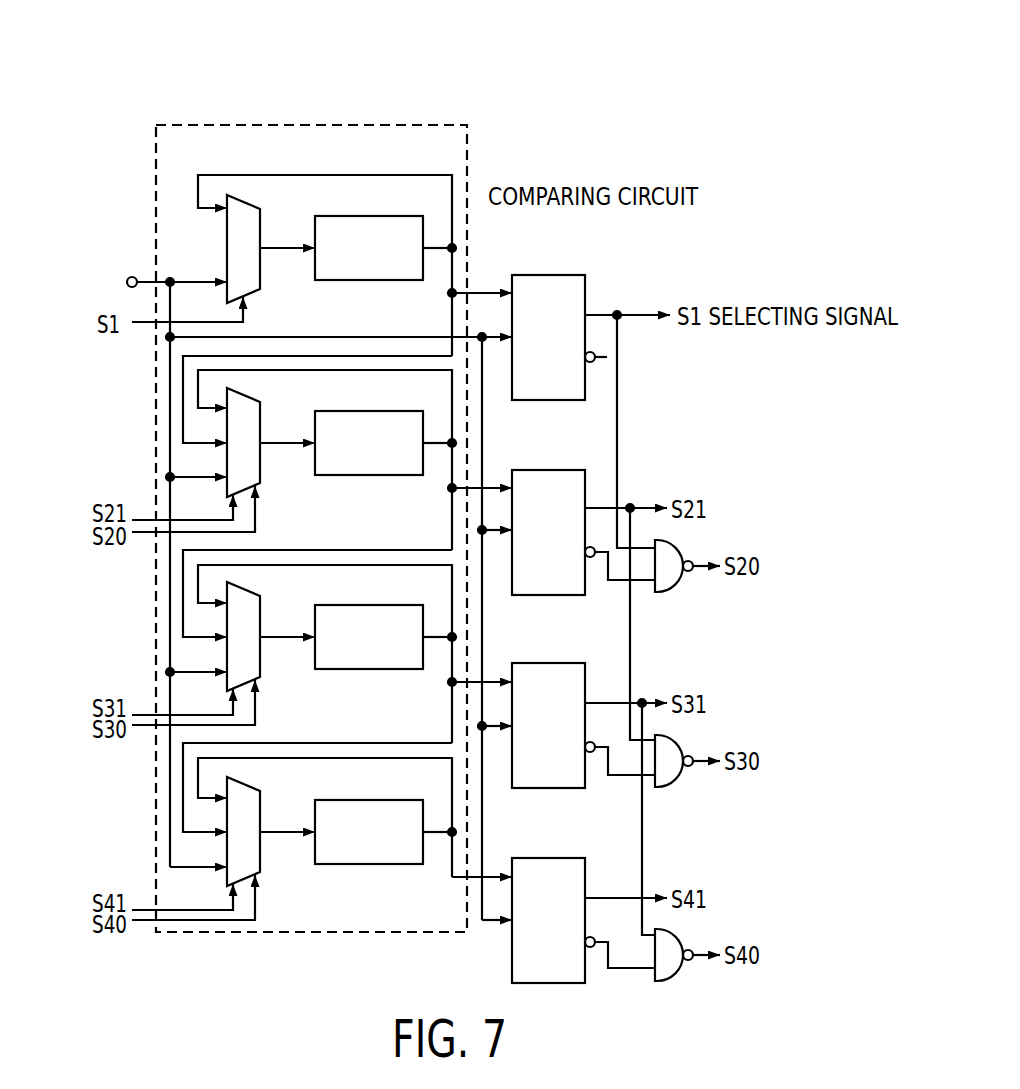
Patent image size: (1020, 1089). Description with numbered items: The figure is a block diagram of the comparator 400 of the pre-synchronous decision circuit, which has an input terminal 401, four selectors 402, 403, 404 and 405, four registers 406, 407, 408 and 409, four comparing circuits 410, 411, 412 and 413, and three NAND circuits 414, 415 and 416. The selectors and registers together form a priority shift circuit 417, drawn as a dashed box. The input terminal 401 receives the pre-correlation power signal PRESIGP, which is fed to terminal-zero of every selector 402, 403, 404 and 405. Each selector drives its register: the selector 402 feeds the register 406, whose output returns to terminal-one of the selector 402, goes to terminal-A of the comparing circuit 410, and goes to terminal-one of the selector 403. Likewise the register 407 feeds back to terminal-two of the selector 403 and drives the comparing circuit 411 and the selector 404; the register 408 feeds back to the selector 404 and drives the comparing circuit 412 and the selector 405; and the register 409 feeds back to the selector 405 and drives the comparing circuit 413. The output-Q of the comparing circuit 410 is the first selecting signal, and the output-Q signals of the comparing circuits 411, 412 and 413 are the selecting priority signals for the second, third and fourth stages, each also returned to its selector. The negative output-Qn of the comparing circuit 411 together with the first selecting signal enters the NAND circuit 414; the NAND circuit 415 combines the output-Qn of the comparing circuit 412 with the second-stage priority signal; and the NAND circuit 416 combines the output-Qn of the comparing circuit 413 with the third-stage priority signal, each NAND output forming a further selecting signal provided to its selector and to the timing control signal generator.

The comparator 400 is at (522, 60).
The input terminal 401 is at (128, 278).
The selector 402 is at (262, 272).
The selector 403 is at (262, 467).
The selector 404 is at (262, 661).
The selector 405 is at (262, 856).
The register 406 is at (412, 281).
The register 407 is at (412, 476).
The register 408 is at (412, 670).
The register 409 is at (412, 865).
The comparing circuit 410 is at (566, 275).
The comparing circuit 411 is at (568, 470).
The comparing circuit 412 is at (568, 663).
The comparing circuit 413 is at (568, 858).
The NAND circuit 414 is at (678, 546).
The NAND circuit 415 is at (678, 741).
The NAND circuit 416 is at (678, 935).
The priority shift circuit 417 is at (198, 123).